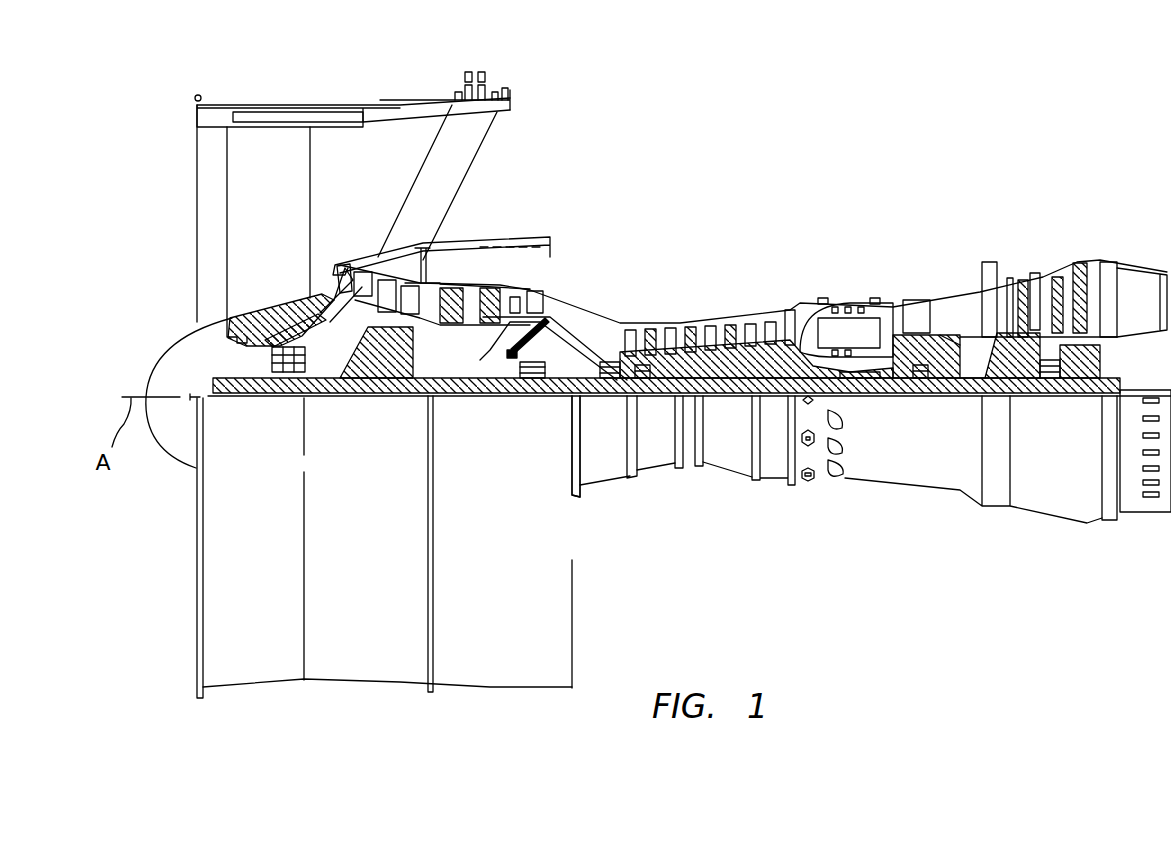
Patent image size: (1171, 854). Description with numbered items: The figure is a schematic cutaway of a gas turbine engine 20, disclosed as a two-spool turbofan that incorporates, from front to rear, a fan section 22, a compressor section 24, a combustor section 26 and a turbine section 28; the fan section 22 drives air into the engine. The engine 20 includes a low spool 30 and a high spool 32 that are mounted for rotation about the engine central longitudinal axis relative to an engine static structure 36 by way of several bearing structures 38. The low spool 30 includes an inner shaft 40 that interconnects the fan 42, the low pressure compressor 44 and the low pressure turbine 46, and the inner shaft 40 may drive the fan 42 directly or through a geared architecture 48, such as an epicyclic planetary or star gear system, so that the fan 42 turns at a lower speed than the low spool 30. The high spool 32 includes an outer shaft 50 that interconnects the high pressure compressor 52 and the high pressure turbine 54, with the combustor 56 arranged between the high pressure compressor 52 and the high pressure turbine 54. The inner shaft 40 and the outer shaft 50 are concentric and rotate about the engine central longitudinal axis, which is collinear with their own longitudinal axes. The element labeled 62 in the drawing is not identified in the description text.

The gas turbine engine 20 is at (950, 145).
The fan section 22 is at (425, 82).
The compressor section 24 is at (435, 205).
The combustor section 26 is at (900, 205).
The turbine section 28 is at (1107, 205).
The low spool 30 is at (733, 400).
The high spool 32 is at (735, 345).
The engine static structure 36 is at (778, 484).
The bearing structures 38 is at (458, 450).
The inner shaft 40 is at (593, 392).
The fan 42 is at (275, 232).
The low pressure compressor 44 is at (497, 292).
The low pressure turbine 46 is at (1040, 285).
The geared architecture 48 is at (382, 390).
The outer shaft 50 is at (855, 383).
The high pressure compressor 52 is at (717, 360).
The high pressure turbine 54 is at (915, 312).
The combustor 56 is at (847, 338).
The bearing system 62 is at (640, 380).